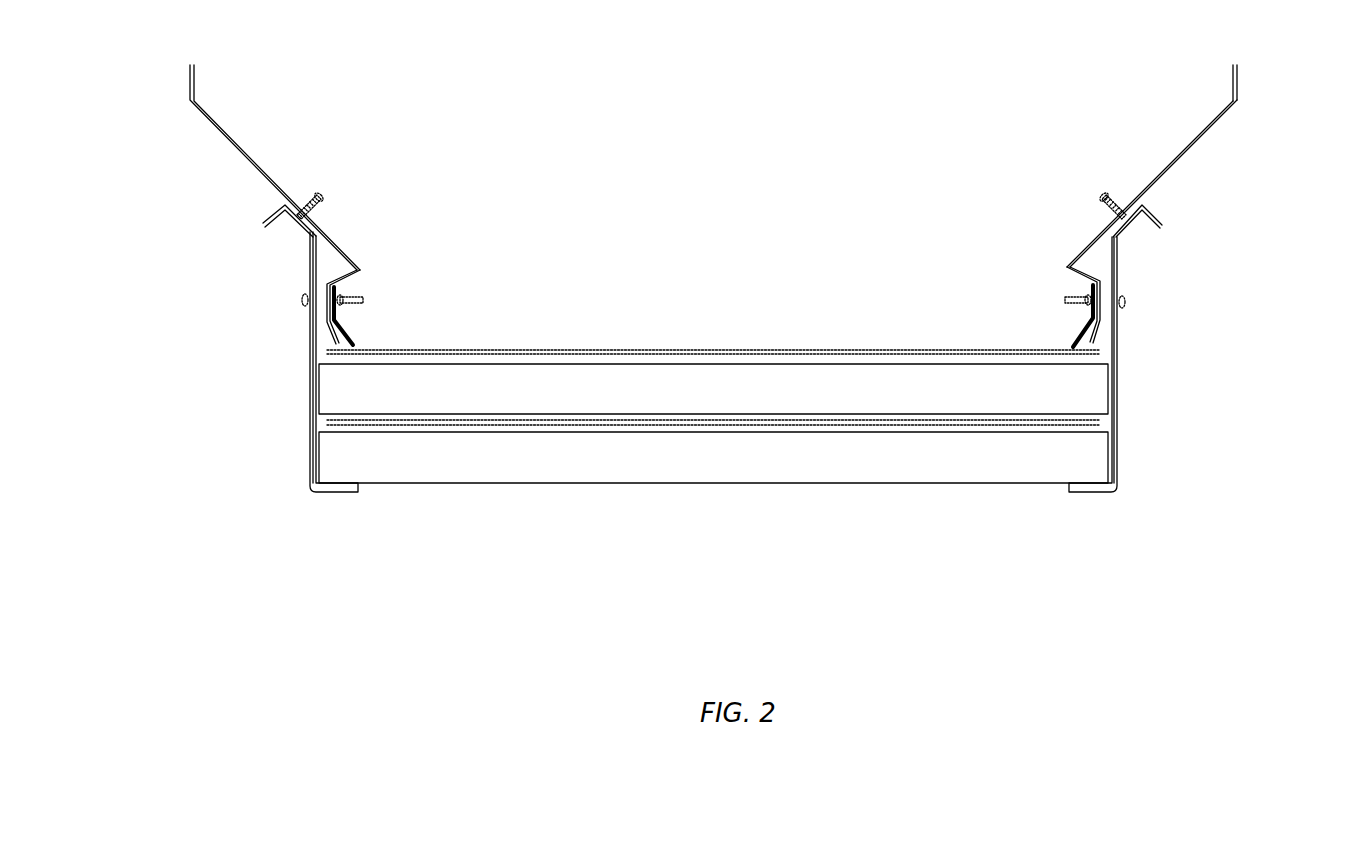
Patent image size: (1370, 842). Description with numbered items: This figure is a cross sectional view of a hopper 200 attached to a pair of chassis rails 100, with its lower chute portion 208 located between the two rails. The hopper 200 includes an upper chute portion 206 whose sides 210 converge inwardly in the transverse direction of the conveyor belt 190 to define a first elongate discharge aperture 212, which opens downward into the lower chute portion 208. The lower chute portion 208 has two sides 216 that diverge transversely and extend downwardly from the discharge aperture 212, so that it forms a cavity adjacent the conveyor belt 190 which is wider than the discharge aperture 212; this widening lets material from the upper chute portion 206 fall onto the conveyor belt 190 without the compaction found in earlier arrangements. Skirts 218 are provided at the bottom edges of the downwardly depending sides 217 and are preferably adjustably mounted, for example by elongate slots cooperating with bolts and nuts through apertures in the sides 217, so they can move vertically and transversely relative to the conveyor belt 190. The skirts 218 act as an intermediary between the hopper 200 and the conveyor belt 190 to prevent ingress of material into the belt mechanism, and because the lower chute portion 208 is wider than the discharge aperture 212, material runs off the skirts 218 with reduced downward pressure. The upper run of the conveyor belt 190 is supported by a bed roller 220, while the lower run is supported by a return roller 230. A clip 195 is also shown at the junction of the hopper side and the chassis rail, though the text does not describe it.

The chassis rails 100 is at (312, 467).
The conveyor belt 190 is at (1103, 352).
The clip 195 is at (285, 208).
The hopper 200 is at (1222, 97).
The upper chute portion 206 is at (180, 70).
The lower chute portion 208 is at (180, 270).
The sides 210 is at (1178, 162).
The discharge aperture 212 is at (1068, 265).
The sides 216 is at (1083, 278).
The downwardly depending sides 217 is at (1100, 315).
The skirts 218 is at (350, 340).
The bed roller 220 is at (337, 382).
The return roller 230 is at (712, 452).